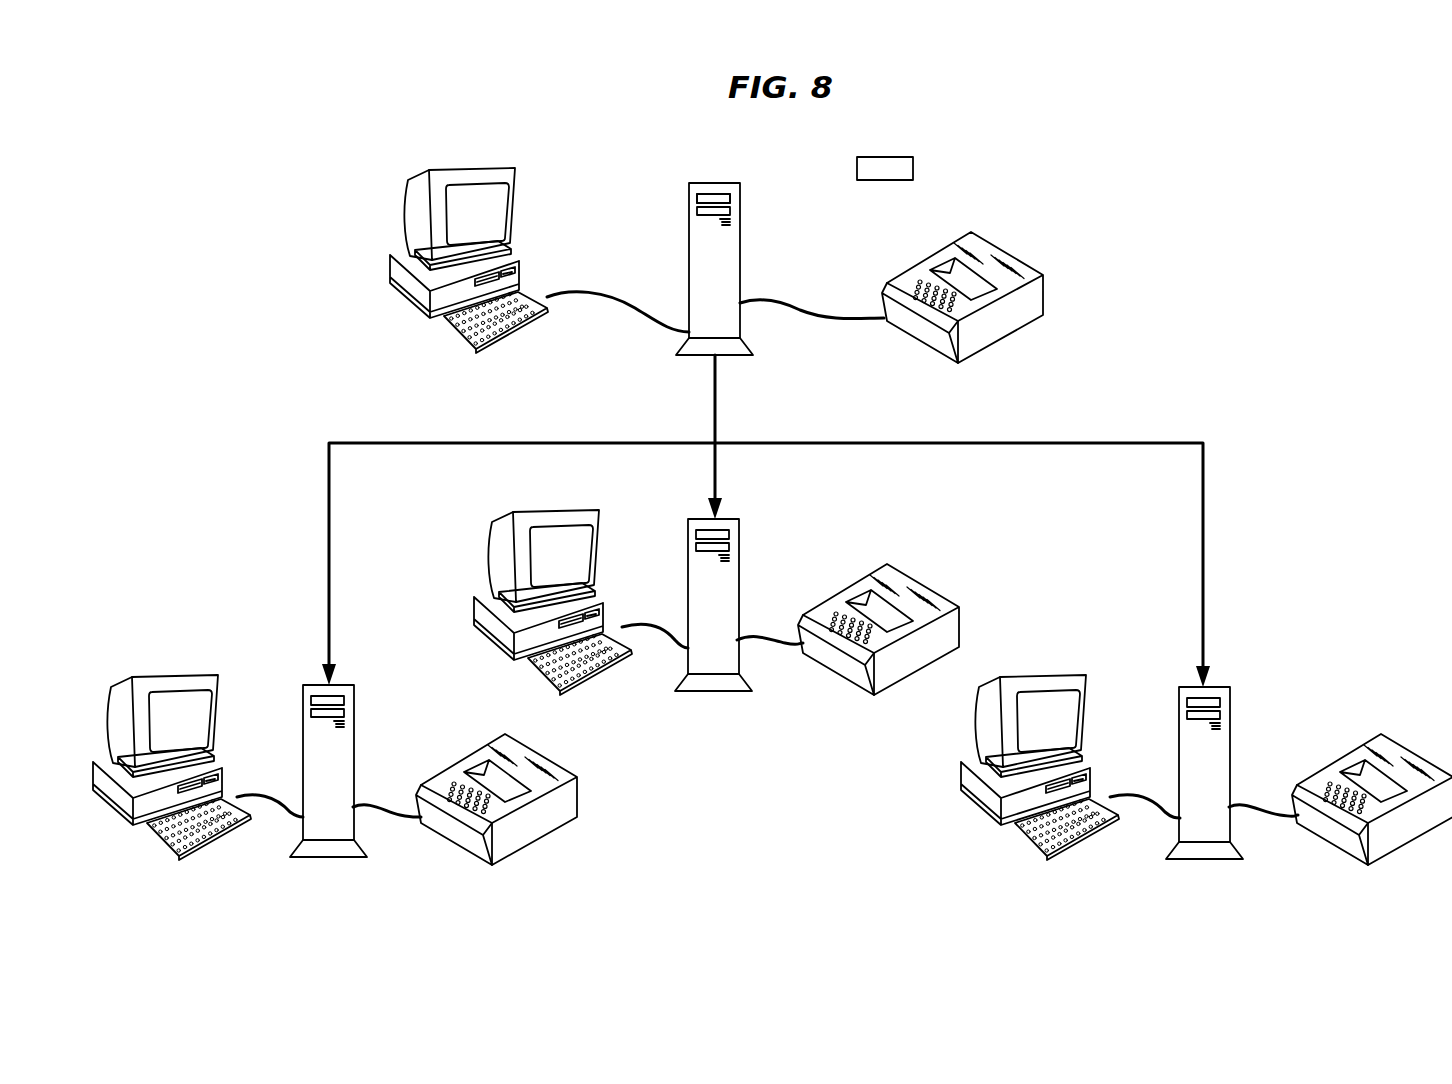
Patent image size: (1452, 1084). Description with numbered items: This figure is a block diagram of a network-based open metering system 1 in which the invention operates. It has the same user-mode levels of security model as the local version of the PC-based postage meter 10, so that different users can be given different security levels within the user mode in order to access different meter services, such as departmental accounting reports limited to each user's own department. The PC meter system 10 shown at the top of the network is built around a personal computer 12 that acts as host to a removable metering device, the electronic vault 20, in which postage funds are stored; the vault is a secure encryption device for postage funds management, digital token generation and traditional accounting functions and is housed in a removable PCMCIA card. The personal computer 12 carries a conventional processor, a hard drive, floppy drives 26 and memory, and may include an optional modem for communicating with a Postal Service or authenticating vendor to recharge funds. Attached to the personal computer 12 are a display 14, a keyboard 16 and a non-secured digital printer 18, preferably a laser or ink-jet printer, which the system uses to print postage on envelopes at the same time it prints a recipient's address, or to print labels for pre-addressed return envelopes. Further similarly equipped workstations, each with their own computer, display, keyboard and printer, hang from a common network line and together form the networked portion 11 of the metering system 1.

The network-based open metering system 1 is at (318, 406).
The PC meter system 10 is at (1048, 226).
The second network group 11 is at (1316, 541).
The personal computer 12 is at (739, 262).
The display 14 is at (486, 243).
The keyboard 16 is at (496, 340).
The non-secured digital printer 18 is at (962, 327).
The electronic vault 20 is at (913, 168).
The floppy drive 26 is at (697, 197).